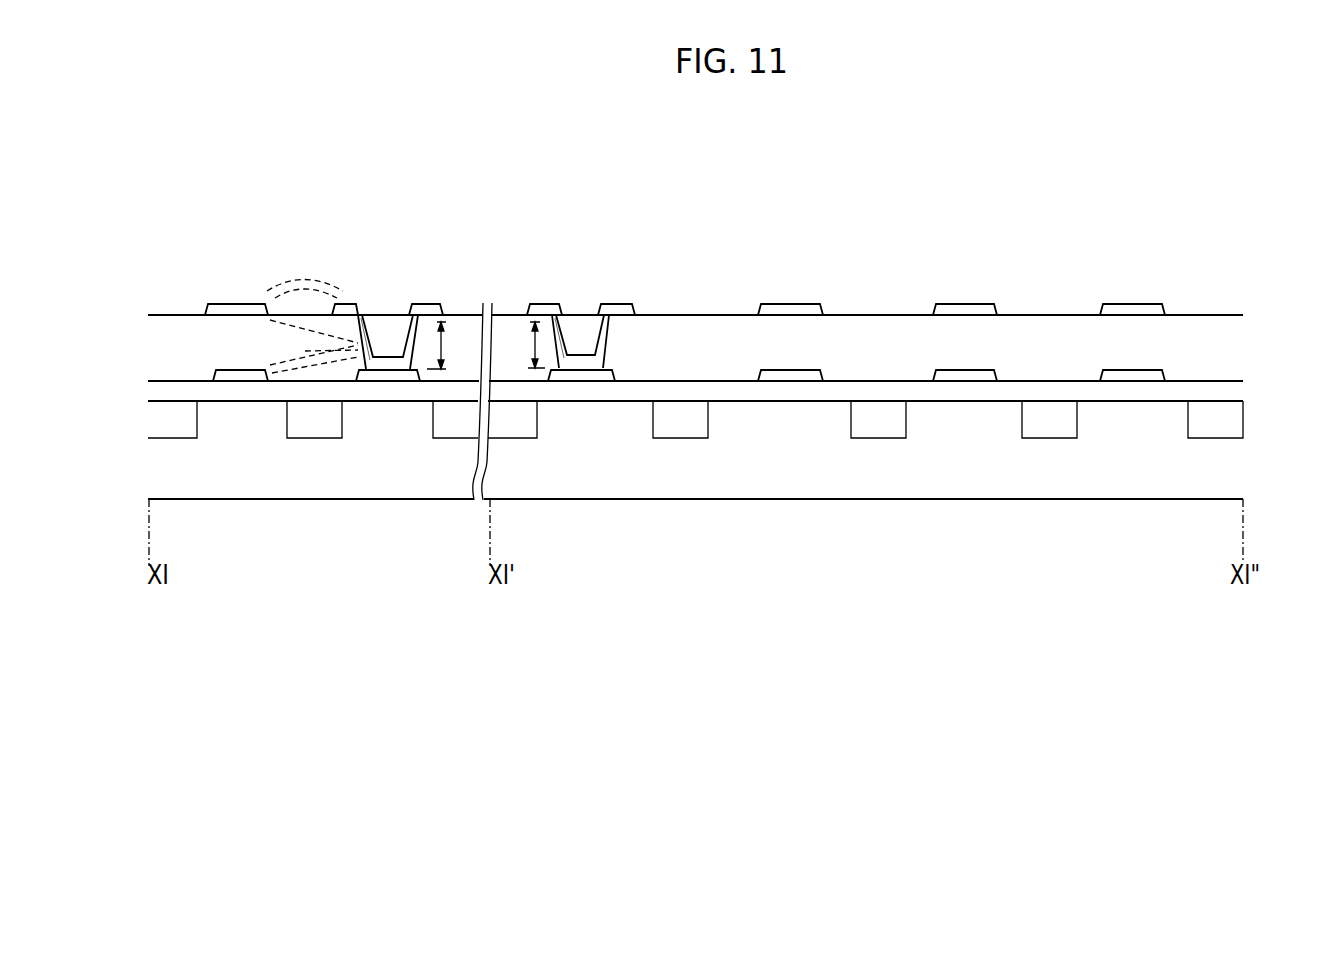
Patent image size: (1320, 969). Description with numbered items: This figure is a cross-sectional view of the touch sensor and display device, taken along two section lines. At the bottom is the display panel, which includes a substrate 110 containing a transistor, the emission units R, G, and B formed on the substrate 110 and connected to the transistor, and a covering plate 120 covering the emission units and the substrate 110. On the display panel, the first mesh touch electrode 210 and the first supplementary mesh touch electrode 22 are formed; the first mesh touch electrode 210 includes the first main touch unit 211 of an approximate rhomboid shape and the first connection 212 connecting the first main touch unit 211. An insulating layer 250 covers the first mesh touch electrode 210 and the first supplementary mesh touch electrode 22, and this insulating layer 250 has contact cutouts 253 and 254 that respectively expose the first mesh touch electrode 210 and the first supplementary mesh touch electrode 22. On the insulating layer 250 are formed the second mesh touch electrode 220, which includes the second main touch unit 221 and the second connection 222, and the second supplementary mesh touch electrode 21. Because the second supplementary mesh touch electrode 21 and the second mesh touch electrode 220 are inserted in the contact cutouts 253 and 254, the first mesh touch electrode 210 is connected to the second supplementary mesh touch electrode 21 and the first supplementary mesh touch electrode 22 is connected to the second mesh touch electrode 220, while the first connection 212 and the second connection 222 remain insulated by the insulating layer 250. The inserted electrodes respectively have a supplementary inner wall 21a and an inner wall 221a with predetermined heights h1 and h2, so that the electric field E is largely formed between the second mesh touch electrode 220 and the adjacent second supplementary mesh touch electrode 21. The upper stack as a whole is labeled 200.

The second supplementary mesh touch electrode 21 is at (240, 306).
The supplementary inner wall 21a is at (595, 327).
The first supplementary mesh touch electrode 22 is at (393, 382).
The substrate 110 is at (1248, 384).
The covering plate 120 is at (828, 392).
The upper panel 200 is at (1248, 305).
The first mesh touch electrode 210 is at (795, 548).
The first main touch unit 211 is at (248, 382).
The first connection 212 is at (768, 382).
The second mesh touch electrode 220 is at (1222, 182).
The second main touch unit 221 is at (428, 305).
The inner wall 221a is at (404, 327).
The second connection 222 is at (786, 308).
The insulating layer 250 is at (879, 331).
The contact cutout 253 is at (577, 330).
The contact cutout 254 is at (380, 328).
The electric field E is at (299, 268).
The height h1 is at (526, 345).
The height h2 is at (447, 345).